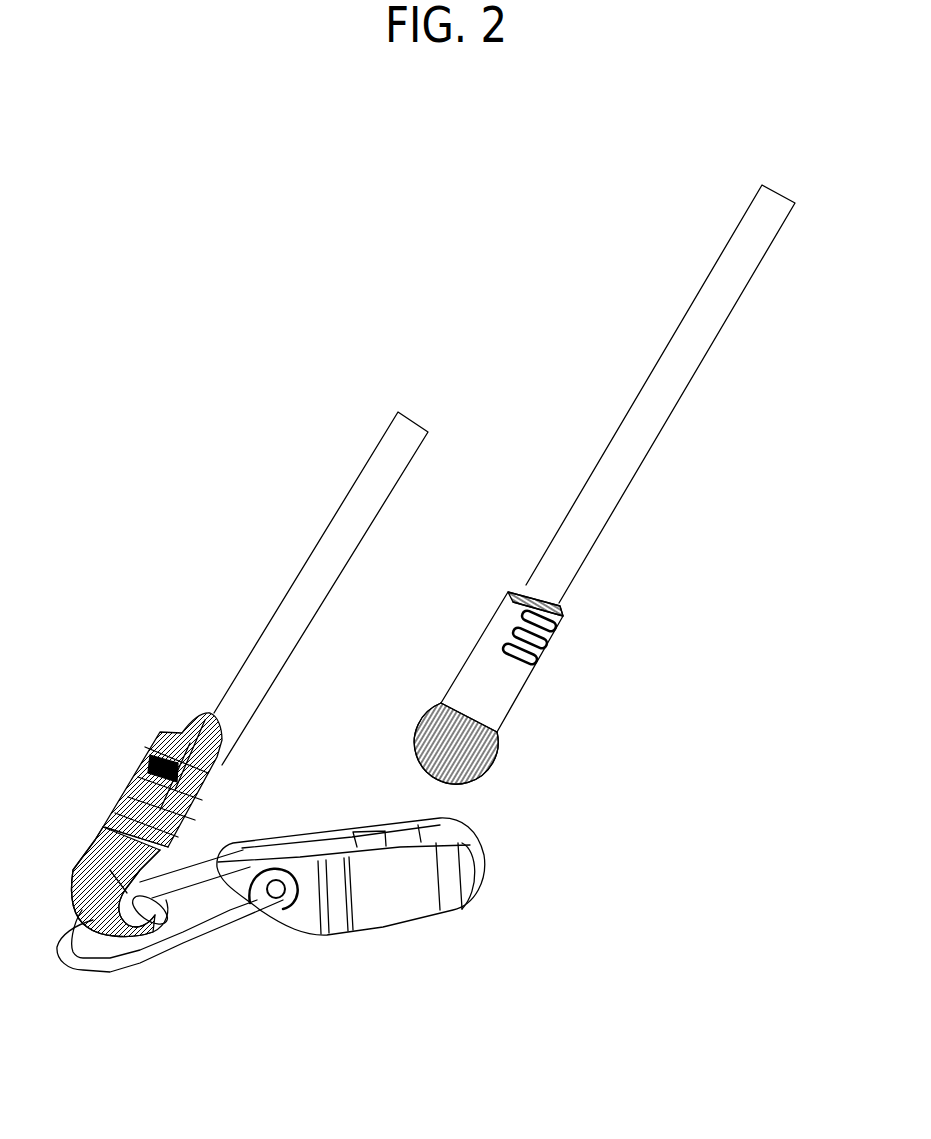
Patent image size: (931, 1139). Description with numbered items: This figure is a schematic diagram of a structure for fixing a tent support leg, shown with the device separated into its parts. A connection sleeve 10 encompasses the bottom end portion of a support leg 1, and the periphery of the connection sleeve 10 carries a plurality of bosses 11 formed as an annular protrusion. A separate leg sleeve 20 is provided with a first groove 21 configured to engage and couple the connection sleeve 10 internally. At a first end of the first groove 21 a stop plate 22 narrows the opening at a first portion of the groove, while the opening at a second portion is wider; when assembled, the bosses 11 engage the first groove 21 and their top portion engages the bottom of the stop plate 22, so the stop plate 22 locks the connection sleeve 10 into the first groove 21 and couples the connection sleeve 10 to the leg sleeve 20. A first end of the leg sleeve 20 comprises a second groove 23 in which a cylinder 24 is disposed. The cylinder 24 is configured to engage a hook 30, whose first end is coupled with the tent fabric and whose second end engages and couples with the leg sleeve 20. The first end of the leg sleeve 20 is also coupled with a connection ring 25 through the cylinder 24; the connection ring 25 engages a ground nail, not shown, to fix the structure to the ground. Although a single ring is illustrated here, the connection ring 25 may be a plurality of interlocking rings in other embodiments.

The support leg 1 is at (582, 523).
The connection sleeve 10 is at (515, 680).
The bosses 11 is at (493, 757).
The leg sleeve 20 is at (310, 868).
The first groove 21 is at (485, 860).
The stop plate 22 is at (387, 833).
The second groove 23 is at (302, 852).
The cylinder 24 is at (260, 913).
The connection ring 25 is at (143, 957).
The hook 30 is at (100, 840).